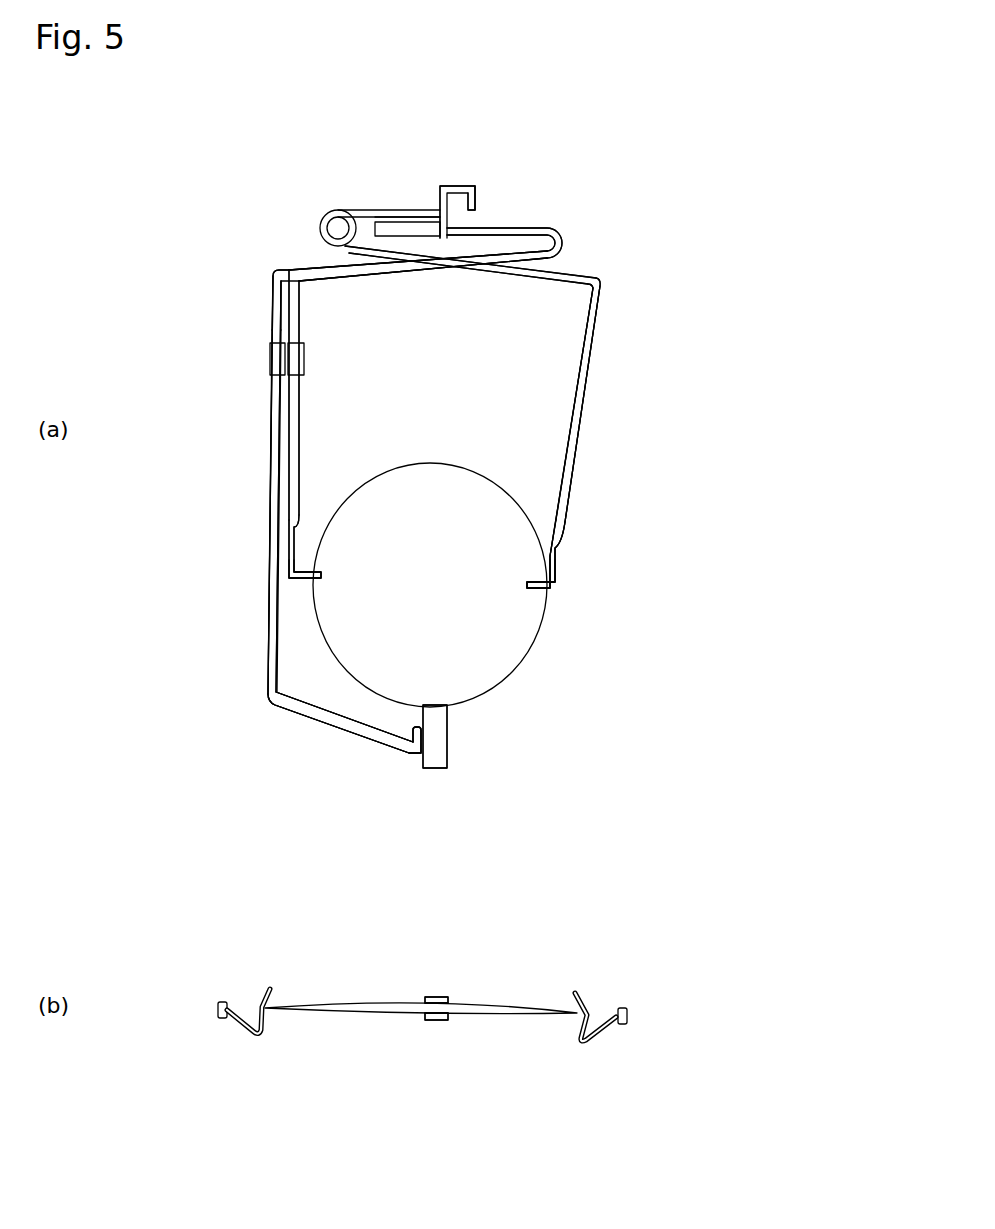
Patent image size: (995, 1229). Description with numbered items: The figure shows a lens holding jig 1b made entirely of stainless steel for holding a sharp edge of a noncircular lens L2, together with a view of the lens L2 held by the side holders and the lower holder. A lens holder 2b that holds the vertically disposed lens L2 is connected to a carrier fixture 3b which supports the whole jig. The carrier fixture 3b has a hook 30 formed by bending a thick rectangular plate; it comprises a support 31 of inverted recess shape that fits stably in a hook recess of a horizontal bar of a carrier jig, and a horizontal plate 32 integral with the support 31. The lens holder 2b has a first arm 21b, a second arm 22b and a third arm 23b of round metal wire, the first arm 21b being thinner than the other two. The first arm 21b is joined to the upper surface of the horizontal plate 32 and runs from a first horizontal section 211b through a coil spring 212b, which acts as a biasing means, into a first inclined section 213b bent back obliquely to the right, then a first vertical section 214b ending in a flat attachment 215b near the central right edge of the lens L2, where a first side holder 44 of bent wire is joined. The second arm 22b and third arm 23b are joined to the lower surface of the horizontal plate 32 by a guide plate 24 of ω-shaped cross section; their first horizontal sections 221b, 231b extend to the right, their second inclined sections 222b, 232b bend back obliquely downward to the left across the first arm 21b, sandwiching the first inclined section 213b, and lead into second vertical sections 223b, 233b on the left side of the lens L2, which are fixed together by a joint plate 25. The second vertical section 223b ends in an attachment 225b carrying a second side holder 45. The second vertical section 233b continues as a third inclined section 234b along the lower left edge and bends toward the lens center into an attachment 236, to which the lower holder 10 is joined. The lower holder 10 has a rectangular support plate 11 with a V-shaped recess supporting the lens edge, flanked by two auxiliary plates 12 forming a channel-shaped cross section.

The lens holding jig 1b is at (652, 245).
The lens holder 2b is at (195, 298).
The carrier fixture 3b is at (502, 184).
The lower holder 10 is at (452, 757).
The support plate 11 is at (428, 1015).
The auxiliary plate 12 is at (437, 768).
The first arm 21b is at (600, 375).
The second arm 22b is at (306, 440).
The third arm 23b is at (258, 655).
The guide plate 24 is at (425, 213).
The joint plate 25 is at (270, 360).
The hook 30 is at (440, 184).
The support 31 is at (470, 200).
The horizontal plate 32 is at (392, 212).
The first side holder 44 is at (546, 590).
The second side holder 45 is at (300, 582).
The first horizontal section 211b is at (337, 210).
The coil spring 212b is at (320, 222).
The first inclined section 213b is at (540, 283).
The first vertical section 214b is at (585, 430).
The attachment 215b is at (560, 560).
The first horizontal section 221b is at (523, 228).
The second inclined section 222b is at (400, 272).
The second vertical section 223b is at (300, 335).
The attachment 225b is at (300, 537).
The first horizontal section 231b is at (548, 210).
The second inclined section 232b is at (273, 268).
The second vertical section 233b is at (272, 450).
The third inclined section 234b is at (320, 728).
The attachment 236 is at (418, 752).
The lens L2 is at (508, 655).